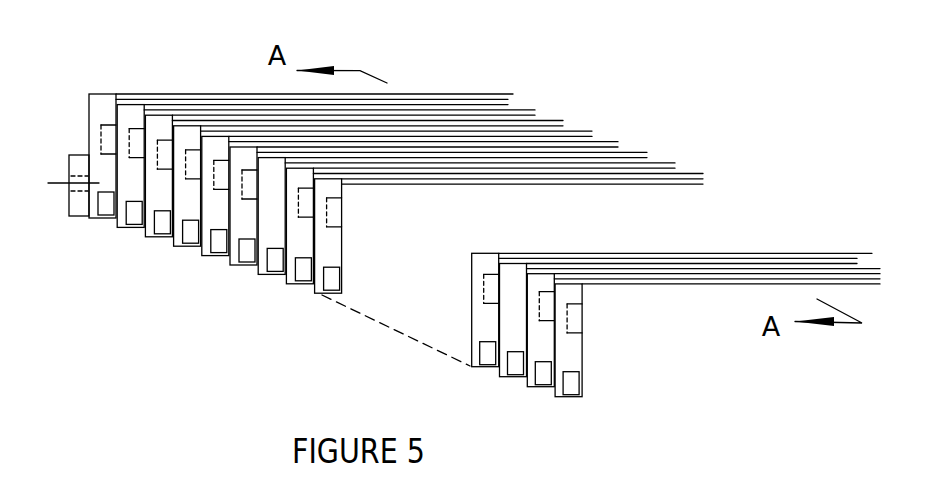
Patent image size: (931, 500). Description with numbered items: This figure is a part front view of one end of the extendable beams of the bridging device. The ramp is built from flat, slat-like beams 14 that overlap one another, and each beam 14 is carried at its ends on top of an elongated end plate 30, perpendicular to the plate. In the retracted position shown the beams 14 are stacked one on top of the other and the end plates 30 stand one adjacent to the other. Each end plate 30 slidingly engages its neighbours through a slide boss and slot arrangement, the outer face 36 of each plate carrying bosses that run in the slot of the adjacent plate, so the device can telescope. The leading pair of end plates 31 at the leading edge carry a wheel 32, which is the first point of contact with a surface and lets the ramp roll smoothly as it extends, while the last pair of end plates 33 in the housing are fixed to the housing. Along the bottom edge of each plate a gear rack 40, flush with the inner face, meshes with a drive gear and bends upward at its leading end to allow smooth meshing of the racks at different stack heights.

The beam 14 is at (226, 94).
The end plate 30 is at (160, 128).
The leading pair of end plates 31 is at (101, 112).
The wheel 32 is at (70, 205).
The last pair of end plates 33 is at (573, 352).
The outer face 36 is at (231, 197).
The gear rack 40 is at (137, 213).